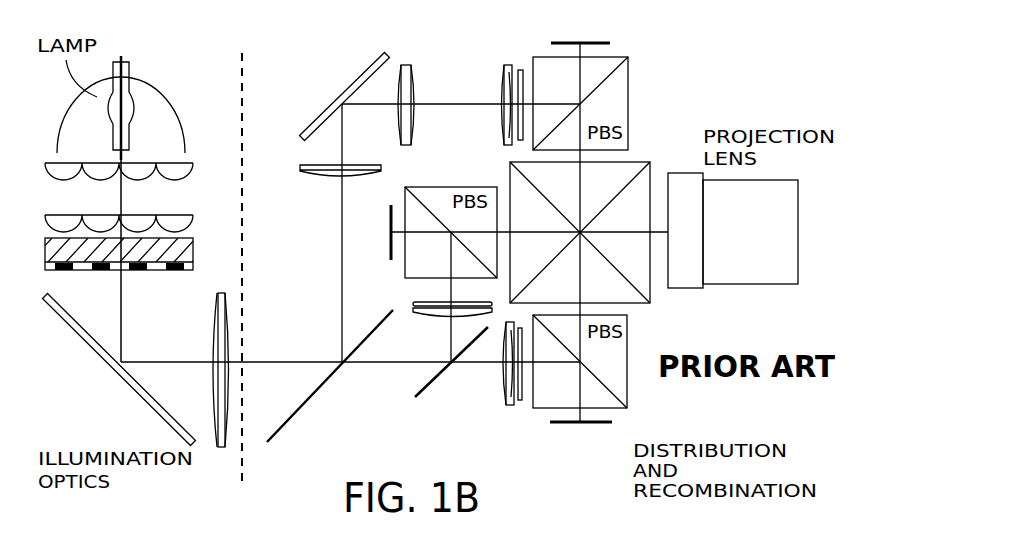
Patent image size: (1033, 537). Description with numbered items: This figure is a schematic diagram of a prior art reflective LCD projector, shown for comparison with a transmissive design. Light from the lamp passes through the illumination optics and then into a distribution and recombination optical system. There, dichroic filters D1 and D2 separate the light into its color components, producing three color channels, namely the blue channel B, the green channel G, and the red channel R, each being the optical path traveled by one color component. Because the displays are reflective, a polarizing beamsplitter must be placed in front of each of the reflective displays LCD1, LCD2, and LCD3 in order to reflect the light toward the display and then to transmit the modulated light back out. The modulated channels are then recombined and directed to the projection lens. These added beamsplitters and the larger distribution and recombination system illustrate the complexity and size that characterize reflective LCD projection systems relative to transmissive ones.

The reflective LCD LCD1 is at (581, 435).
The reflective LCD LCD2 is at (373, 244).
The reflective LCD LCD3 is at (580, 30).
The dichroic filter D1 is at (330, 376).
The dichroic filter D2 is at (440, 372).
The blue color channel B is at (327, 233).
The green color channel G is at (452, 297).
The red color channel R is at (501, 363).